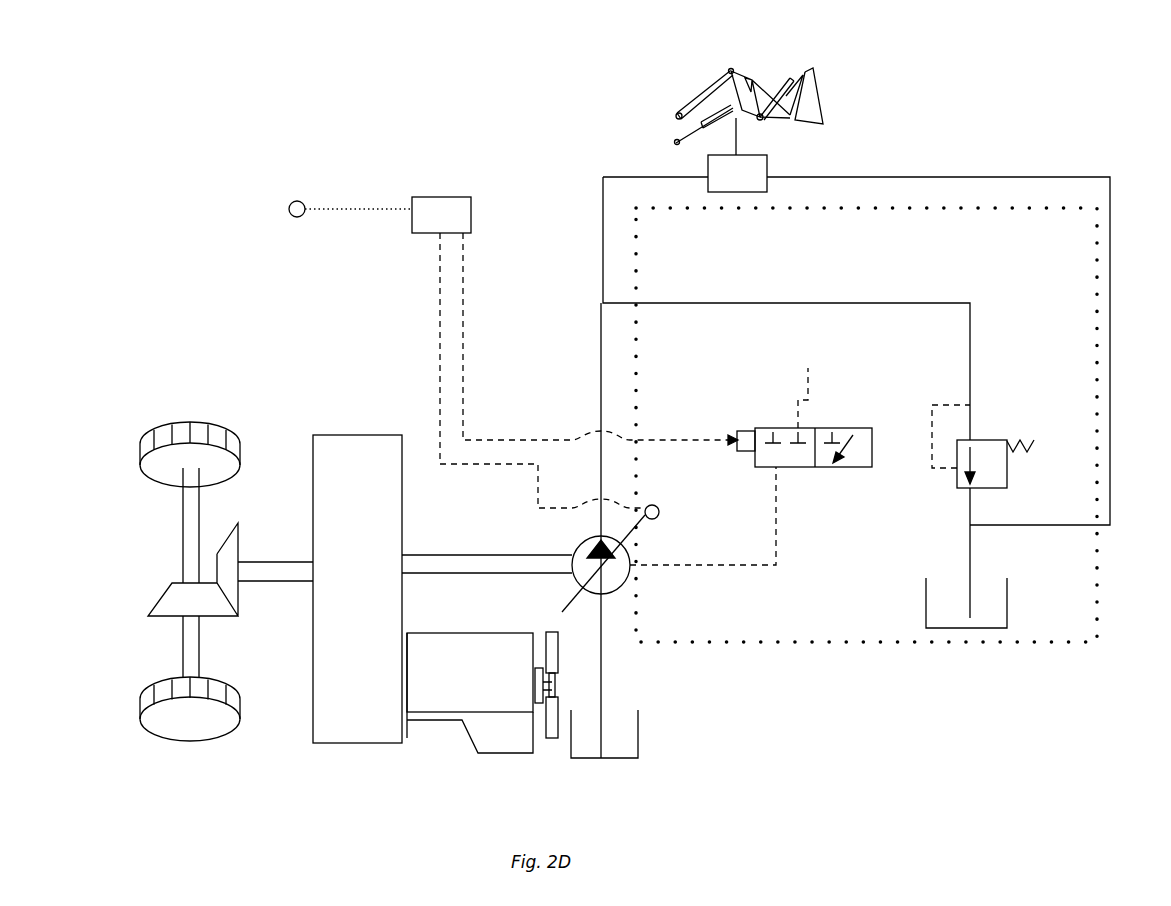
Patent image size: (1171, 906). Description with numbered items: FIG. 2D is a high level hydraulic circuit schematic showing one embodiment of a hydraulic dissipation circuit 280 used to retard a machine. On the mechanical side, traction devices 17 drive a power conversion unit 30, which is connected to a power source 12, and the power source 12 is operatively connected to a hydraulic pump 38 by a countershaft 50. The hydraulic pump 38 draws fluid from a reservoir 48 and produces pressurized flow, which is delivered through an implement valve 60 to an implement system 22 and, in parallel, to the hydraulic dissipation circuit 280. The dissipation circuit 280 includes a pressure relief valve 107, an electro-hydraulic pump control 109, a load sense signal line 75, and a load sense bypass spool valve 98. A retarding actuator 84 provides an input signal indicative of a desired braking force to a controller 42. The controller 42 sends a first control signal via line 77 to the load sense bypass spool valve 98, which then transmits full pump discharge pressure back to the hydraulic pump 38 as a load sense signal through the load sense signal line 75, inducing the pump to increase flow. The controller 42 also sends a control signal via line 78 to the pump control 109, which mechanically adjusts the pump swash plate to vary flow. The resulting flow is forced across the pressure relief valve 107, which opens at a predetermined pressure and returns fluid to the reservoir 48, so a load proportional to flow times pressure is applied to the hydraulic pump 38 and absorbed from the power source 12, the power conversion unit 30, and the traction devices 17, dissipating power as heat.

The power source 12 is at (460, 687).
The traction devices 17 is at (122, 702).
The implement system 22 is at (680, 83).
The power conversion unit 30 is at (352, 433).
The hydraulic pump 38 is at (617, 595).
The controller 42 is at (452, 197).
The reservoir 48 is at (1000, 672).
The countershaft 50 is at (403, 663).
The implement valve 60 is at (767, 165).
The load sense signal line 75 is at (732, 567).
The line 77 is at (783, 427).
The line 78 is at (458, 466).
The retarding actuator 84 is at (288, 202).
The load sense bypass spool valve 98 is at (800, 473).
The pressure relief valve 107 is at (990, 440).
The electro-hydraulic pump control 109 is at (660, 511).
The hydraulic dissipation circuit 280 is at (1097, 598).